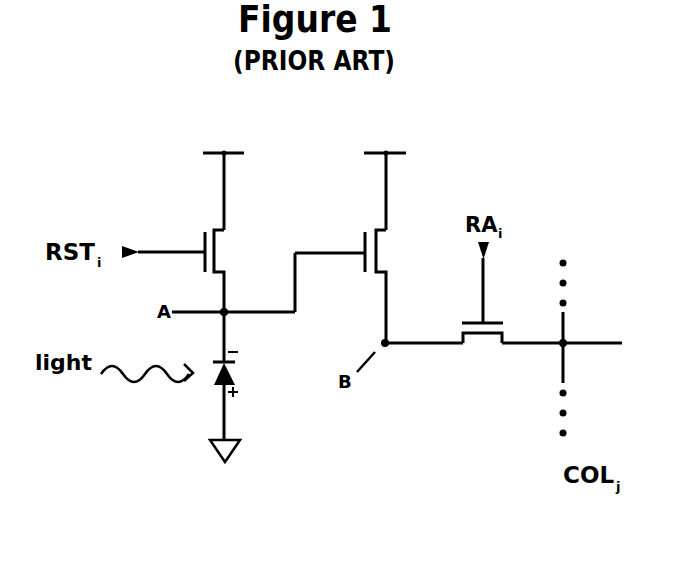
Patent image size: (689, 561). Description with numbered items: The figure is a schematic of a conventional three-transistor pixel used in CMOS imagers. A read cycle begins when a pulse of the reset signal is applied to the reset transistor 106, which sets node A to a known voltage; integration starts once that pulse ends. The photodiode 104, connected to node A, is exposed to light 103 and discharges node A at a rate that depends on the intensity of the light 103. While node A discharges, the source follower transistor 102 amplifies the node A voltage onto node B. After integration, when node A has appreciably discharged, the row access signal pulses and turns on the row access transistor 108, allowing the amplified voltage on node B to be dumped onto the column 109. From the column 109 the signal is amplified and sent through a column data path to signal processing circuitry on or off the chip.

The source follower transistor 102 is at (397, 242).
The light 103 is at (105, 385).
The photodiode 104 is at (212, 387).
The reset transistor 106 is at (232, 242).
The row access transistor 108 is at (483, 353).
The column 109 is at (581, 348).